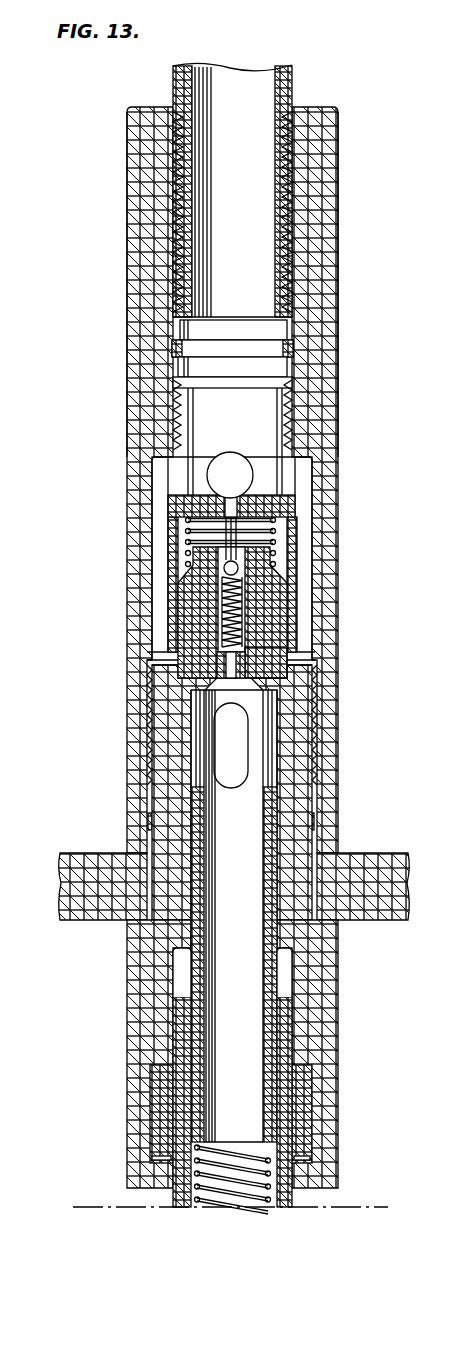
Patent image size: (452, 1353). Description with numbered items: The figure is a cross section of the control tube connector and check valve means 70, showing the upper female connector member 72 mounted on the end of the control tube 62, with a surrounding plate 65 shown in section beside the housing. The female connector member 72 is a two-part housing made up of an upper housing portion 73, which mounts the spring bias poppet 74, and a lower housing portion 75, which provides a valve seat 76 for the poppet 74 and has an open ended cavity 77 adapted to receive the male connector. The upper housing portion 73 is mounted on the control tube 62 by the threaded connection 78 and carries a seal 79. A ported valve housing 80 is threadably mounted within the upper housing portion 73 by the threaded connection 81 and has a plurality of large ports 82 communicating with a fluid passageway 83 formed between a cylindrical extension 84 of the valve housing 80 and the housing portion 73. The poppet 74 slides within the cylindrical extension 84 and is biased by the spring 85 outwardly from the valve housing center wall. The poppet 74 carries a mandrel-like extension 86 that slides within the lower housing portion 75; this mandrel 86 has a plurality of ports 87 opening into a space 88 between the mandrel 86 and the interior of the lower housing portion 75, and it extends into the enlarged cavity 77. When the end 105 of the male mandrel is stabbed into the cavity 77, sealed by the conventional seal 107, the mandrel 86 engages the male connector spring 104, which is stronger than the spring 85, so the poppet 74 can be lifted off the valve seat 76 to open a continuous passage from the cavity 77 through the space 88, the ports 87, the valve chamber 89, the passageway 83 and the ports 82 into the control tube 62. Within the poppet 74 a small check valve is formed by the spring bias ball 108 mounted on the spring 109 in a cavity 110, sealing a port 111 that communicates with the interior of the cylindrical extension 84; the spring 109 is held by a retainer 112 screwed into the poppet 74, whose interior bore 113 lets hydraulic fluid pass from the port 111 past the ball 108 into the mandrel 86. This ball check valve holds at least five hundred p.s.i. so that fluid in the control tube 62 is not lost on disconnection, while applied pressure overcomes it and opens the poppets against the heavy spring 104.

The control tube 62 is at (285, 88).
The wellhead plate 65 is at (387, 863).
The control tube connector and check valve means 70 is at (99, 281).
The upper female connector member 72 is at (338, 392).
The upper housing portion 73 is at (135, 352).
The spring bias poppet 74 is at (180, 653).
The lower housing portion 75 is at (138, 1023).
The valve seat 76 is at (297, 670).
The open ended cavity 77 is at (280, 972).
The threaded connection 78 is at (290, 207).
The seal 79 is at (275, 336).
The ported valve housing 80 is at (205, 436).
The threaded connection 81 is at (294, 442).
The large ports 82 is at (278, 466).
The fluid passageway 83 is at (160, 553).
The cylindrical extension 84 is at (173, 589).
The spring 85 is at (177, 521).
The mandrel-like extension 86 is at (265, 502).
The ports 87 is at (262, 785).
The space 88 is at (277, 800).
The valve chamber 89 is at (160, 668).
The male connector spring 104 is at (200, 1200).
The end of the male mandrel 105 is at (172, 1093).
The seal 107 is at (300, 1090).
The spring bias ball 108 is at (236, 572).
The spring 109 is at (193, 643).
The cavity 110 is at (243, 612).
The port 111 is at (240, 558).
The retainer 112 is at (248, 658).
The interior bore 113 is at (233, 668).